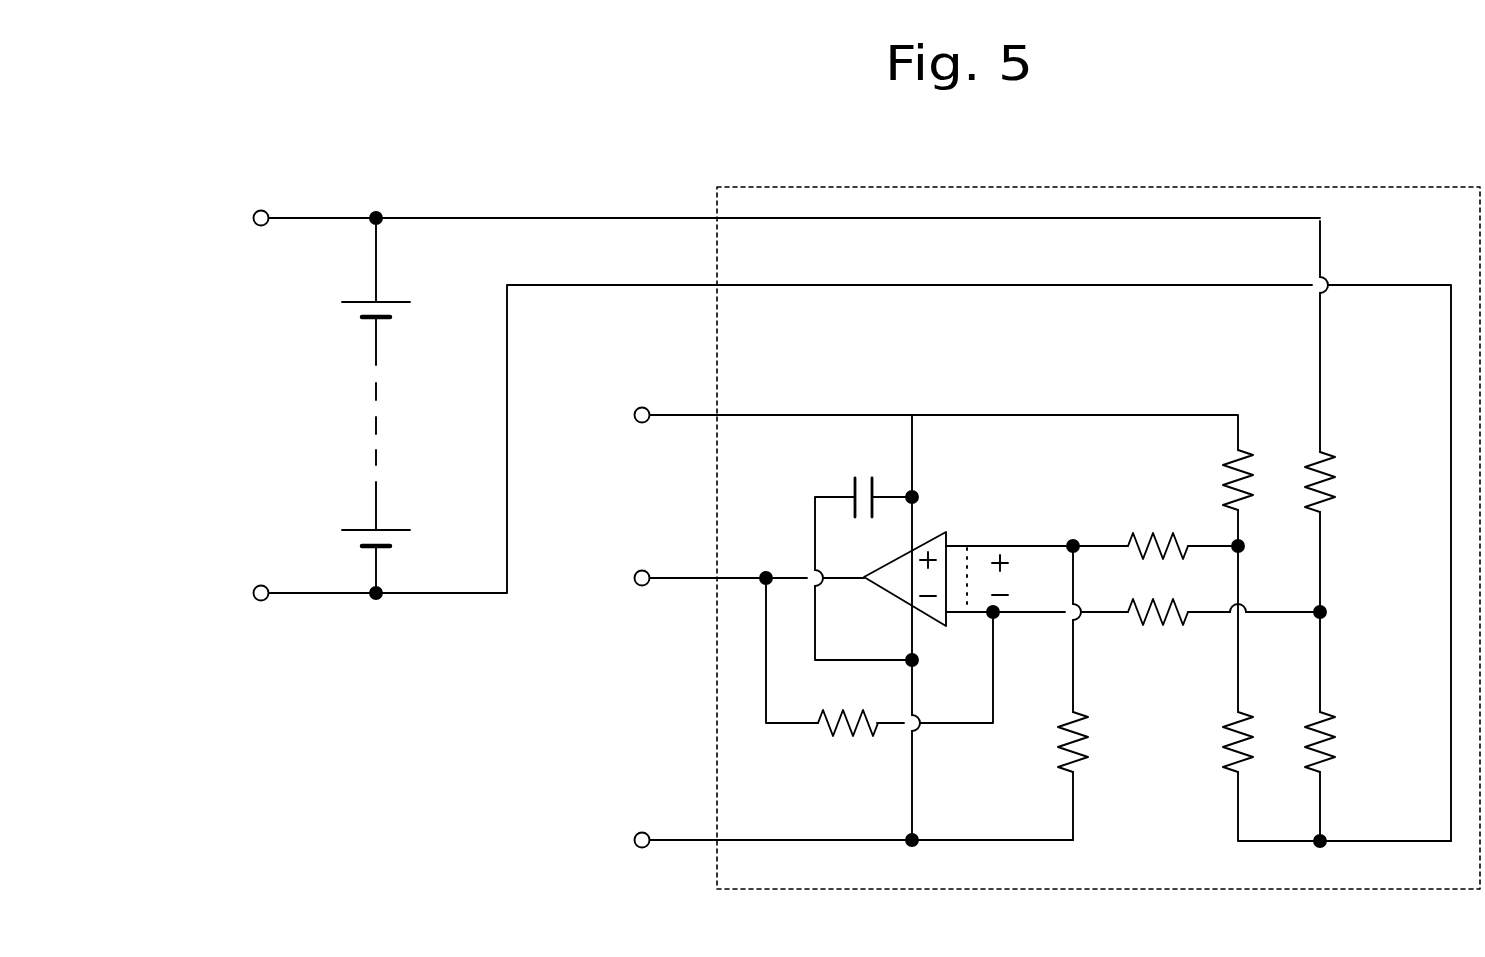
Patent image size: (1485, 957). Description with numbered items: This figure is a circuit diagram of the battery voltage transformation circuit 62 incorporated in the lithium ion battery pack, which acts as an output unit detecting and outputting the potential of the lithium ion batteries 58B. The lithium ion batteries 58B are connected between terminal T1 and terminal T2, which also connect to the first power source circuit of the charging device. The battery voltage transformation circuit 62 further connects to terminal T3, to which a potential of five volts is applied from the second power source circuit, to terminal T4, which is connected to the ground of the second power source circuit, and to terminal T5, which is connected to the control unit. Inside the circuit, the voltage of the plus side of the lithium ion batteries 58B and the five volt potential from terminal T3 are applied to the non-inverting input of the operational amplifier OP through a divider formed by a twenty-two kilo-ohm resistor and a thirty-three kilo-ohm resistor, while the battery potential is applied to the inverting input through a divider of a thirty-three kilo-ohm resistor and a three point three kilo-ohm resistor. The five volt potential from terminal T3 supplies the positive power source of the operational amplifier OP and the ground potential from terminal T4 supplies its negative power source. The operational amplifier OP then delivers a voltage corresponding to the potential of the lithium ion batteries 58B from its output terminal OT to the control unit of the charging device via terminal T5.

The battery voltage transformation circuit 62 is at (988, 185).
The lithium ion batteries 58B is at (350, 302).
The operational amplifier OP is at (946, 532).
The output terminal OT is at (880, 549).
The terminal T1 is at (752, 219).
The terminal T2 is at (748, 451).
The terminal T3 is at (734, 417).
The terminal T4 is at (734, 841).
The terminal T5 is at (681, 579).